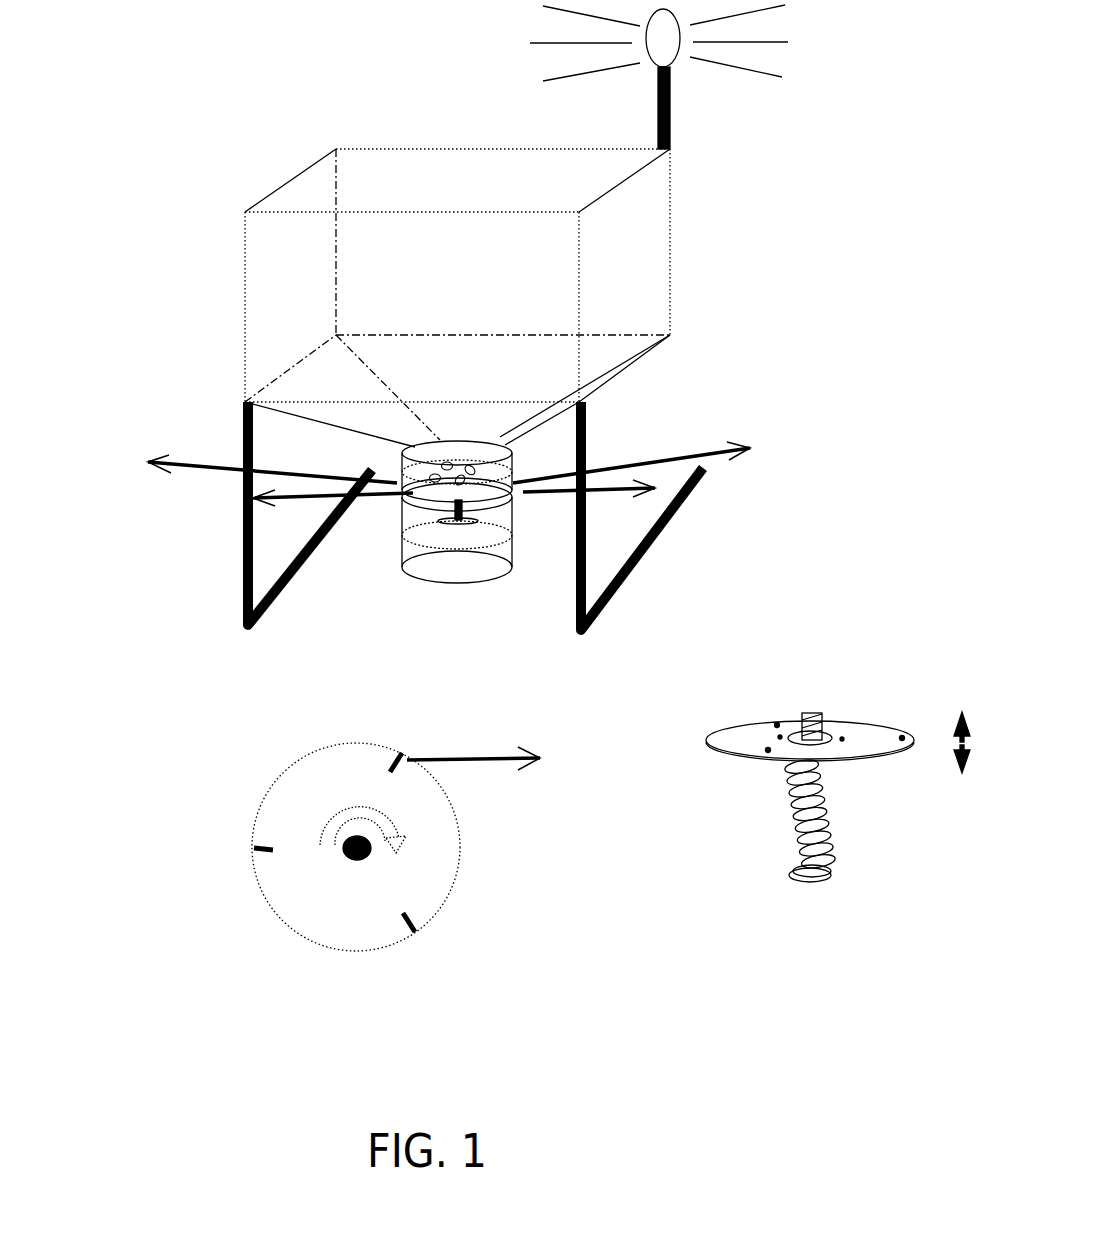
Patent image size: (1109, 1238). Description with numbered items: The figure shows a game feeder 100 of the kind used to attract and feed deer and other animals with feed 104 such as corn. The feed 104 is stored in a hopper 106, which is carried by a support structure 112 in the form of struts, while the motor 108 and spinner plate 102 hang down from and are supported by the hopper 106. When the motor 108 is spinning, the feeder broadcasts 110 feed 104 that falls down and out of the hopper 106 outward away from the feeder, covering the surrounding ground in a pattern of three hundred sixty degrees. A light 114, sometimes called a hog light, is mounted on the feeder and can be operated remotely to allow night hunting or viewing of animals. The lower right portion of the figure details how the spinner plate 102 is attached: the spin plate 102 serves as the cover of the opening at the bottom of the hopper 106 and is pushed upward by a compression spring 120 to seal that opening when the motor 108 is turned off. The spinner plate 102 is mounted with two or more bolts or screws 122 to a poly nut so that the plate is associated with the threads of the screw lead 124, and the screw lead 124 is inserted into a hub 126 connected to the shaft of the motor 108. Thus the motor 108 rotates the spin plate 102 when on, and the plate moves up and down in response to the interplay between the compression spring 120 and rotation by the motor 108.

The game feeder 100 is at (892, 668).
The spinner plate 102 is at (405, 505).
The feed 104 is at (393, 383).
The hopper 106 is at (663, 247).
The motor 108 is at (420, 570).
The broadcast 110 is at (560, 500).
The support structure 112 is at (647, 572).
The light 114 is at (673, 43).
The compression spring 120 is at (832, 807).
The bolts or screws 122 is at (820, 755).
The screw lead 124 is at (802, 718).
The hub 126 is at (825, 875).